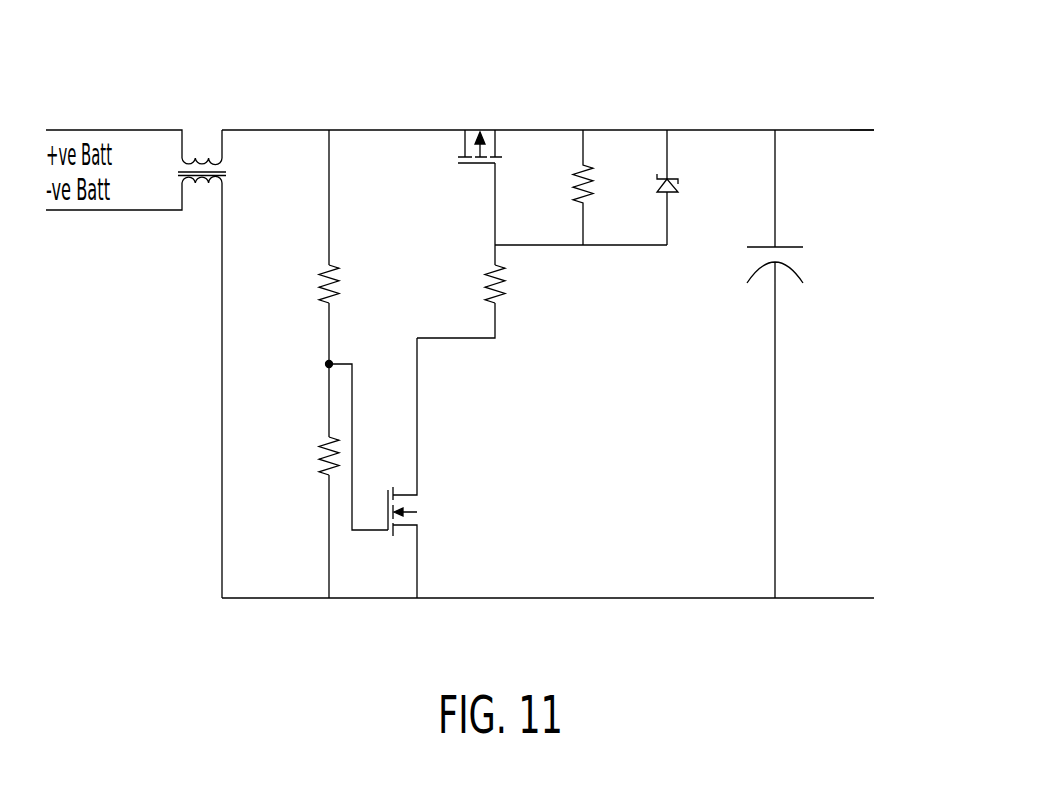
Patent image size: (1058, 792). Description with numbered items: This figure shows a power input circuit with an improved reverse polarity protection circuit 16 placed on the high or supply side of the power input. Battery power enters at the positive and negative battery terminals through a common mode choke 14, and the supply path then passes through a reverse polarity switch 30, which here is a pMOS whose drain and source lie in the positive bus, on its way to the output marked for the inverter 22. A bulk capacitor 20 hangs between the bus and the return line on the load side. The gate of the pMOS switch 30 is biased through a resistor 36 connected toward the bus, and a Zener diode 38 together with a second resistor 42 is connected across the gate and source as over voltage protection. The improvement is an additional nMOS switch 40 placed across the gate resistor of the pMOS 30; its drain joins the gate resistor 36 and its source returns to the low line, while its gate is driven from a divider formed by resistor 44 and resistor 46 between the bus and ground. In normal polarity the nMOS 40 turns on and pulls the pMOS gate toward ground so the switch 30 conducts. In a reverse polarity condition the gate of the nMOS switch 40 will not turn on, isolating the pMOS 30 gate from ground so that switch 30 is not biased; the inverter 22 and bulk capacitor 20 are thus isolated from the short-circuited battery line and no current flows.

The common mode choke 14 is at (187, 162).
The reverse polarity protection circuit 16 is at (459, 132).
The bulk capacitor 20 is at (783, 247).
The inverter 22 is at (901, 140).
The reverse polarity switch 30 is at (476, 164).
The resistor 36 is at (490, 273).
The Zener diode 38 is at (672, 188).
The nMOS switch 40 is at (397, 479).
The resistor R2 42 is at (580, 194).
The resistor R3 44 is at (323, 270).
The resistor R4 46 is at (328, 472).